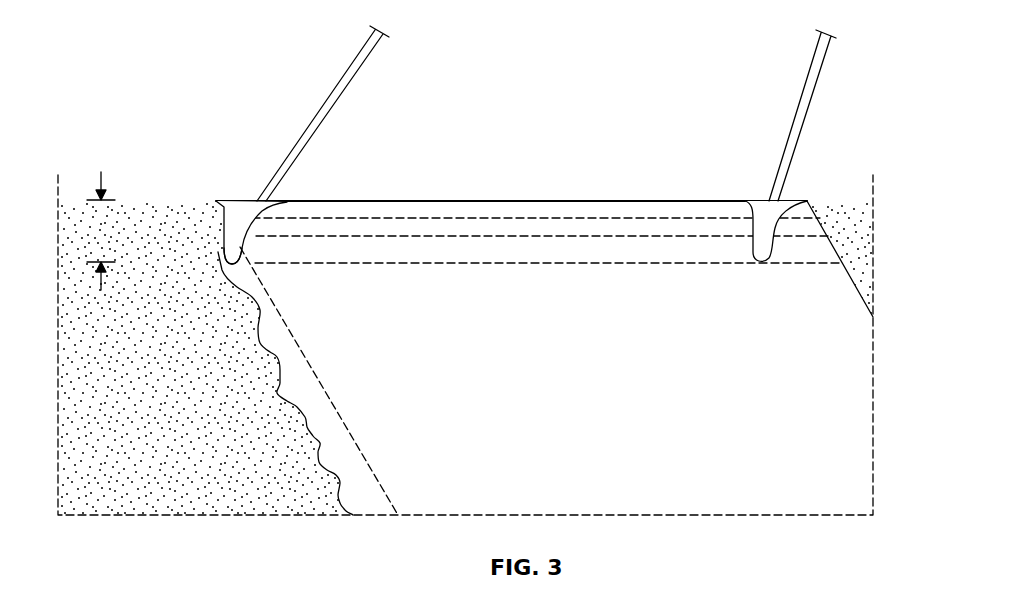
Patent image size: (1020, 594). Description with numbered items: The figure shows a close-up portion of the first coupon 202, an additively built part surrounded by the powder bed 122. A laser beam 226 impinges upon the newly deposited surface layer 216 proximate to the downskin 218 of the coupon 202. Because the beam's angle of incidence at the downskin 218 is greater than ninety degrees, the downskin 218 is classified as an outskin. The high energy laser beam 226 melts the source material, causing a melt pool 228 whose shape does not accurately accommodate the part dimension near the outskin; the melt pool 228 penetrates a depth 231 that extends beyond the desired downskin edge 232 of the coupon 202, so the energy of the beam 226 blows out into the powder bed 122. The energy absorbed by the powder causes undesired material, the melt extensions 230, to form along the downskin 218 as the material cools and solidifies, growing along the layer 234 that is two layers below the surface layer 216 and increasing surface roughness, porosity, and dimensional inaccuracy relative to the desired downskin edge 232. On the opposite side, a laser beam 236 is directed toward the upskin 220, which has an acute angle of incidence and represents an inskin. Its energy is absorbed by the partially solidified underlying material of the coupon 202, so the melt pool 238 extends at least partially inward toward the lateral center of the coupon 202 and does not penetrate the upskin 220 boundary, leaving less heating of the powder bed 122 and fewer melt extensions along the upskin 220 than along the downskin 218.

The powder bed 122 is at (118, 383).
The first coupon 202 is at (518, 292).
The surface layer 216 is at (457, 212).
The downskin 218 is at (223, 216).
The upskin 220 is at (835, 248).
The laser beam 226 is at (318, 121).
The melt pool 228 is at (225, 251).
The melt extensions 230 is at (252, 288).
The depth 231 is at (100, 176).
The desired downskin edge 232 is at (305, 355).
The layer 234 is at (603, 248).
The laser beam 236 is at (797, 121).
The melt pool 238 is at (762, 245).